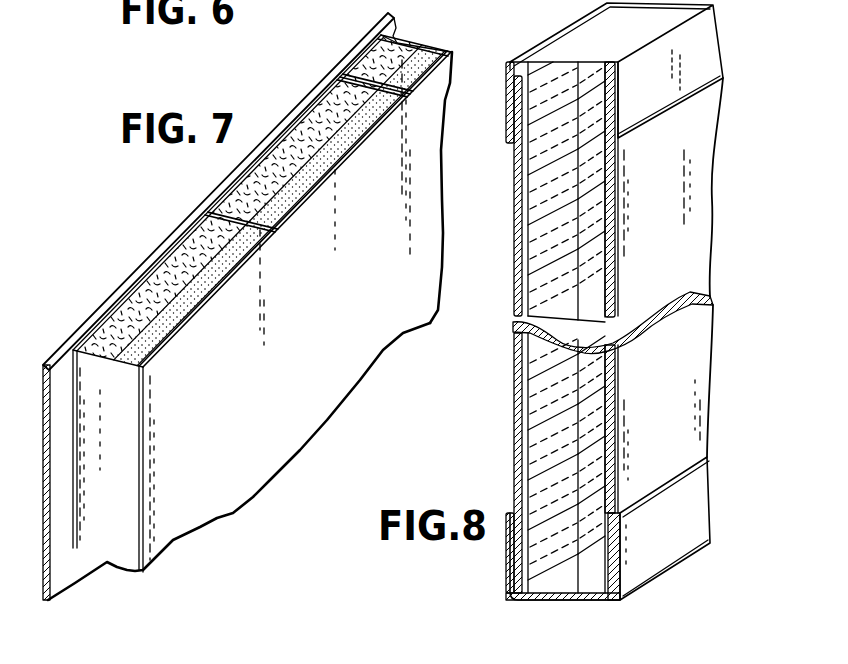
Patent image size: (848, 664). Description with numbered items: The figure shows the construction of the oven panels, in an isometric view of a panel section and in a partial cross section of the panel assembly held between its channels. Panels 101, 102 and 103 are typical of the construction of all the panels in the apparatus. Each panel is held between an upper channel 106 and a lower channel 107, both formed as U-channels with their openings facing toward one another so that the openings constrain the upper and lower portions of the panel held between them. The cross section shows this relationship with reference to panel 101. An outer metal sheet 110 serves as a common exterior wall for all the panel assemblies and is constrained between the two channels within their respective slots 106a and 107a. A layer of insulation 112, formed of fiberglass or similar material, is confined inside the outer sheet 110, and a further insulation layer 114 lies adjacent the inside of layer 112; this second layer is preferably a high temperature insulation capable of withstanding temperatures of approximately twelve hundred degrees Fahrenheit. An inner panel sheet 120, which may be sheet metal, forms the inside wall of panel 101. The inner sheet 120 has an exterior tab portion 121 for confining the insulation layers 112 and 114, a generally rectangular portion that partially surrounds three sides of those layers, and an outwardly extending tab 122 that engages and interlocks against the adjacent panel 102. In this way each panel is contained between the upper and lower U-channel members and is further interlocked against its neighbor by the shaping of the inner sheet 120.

In FIG. 7, the panel 101 is at (220, 522).
In FIG. 8, the panel 101 is at (725, 152).
In FIG. 7, the adjacent panel 102 is at (368, 384).
In FIG. 7, the panel 103 is at (456, 78).
In FIG. 8, the upper channel 106 is at (590, 62).
In FIG. 8, the slot 106a is at (510, 114).
In FIG. 8, the lower channel 107 is at (707, 512).
In FIG. 8, the slot 107a is at (512, 560).
In FIG. 7, the outer metal sheet 110 is at (65, 347).
In FIG. 8, the outer metal sheet 110 is at (513, 256).
In FIG. 7, the insulation layer 112 is at (187, 268).
In FIG. 8, the insulation layer 112 is at (557, 88).
In FIG. 7, the insulation layer 114 is at (222, 262).
In FIG. 8, the insulation layer 114 is at (590, 200).
In FIG. 7, the inner panel sheet 120 is at (190, 298).
In FIG. 8, the inner panel sheet 120 is at (615, 245).
In FIG. 7, the exterior tab portion 121 is at (103, 320).
In FIG. 7, the outwardly extending tab 122 is at (213, 201).